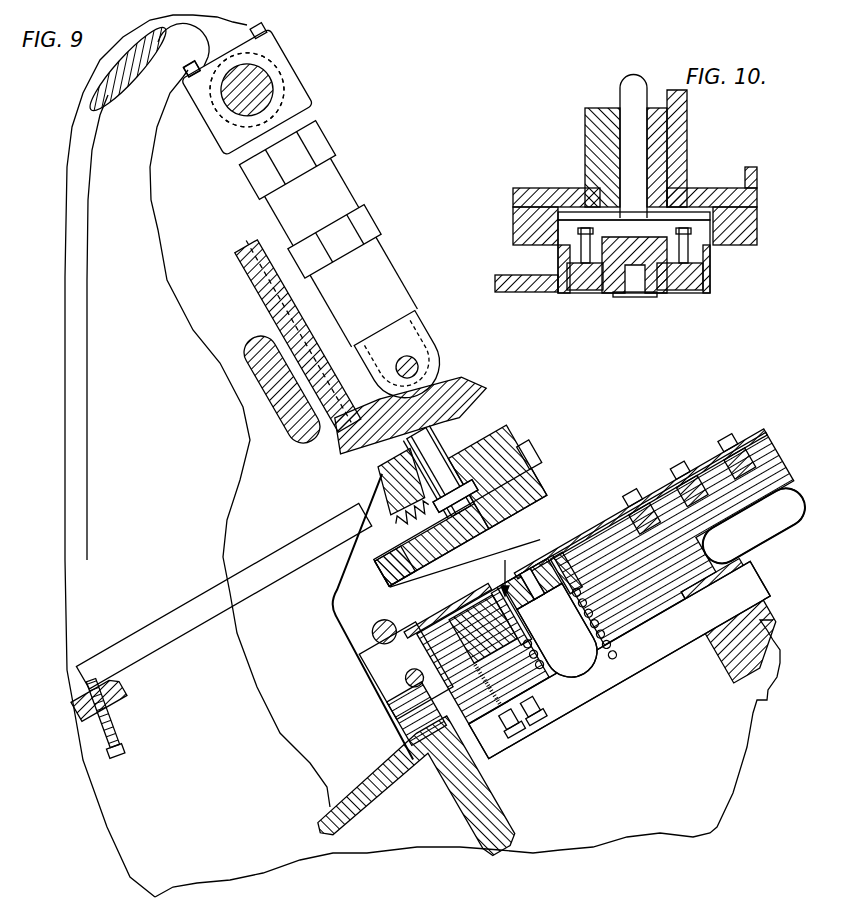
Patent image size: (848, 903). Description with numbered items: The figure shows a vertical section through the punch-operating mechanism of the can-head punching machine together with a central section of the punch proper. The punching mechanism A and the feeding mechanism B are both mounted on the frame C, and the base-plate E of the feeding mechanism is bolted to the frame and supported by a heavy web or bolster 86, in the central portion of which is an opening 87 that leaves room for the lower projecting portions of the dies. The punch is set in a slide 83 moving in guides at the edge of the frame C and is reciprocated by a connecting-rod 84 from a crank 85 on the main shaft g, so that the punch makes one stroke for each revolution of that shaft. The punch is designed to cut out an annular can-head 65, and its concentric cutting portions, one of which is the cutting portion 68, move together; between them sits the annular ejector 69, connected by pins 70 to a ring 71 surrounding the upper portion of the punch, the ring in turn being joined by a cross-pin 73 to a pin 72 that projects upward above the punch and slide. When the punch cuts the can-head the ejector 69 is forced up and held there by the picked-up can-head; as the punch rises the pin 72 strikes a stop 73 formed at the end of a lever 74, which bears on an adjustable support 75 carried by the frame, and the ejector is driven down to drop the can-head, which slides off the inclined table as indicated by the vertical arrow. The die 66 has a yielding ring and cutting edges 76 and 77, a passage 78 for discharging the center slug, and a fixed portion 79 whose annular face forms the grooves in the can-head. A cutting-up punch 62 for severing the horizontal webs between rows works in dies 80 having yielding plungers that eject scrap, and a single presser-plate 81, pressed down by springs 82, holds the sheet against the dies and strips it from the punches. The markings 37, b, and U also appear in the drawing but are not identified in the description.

In FIG. 9, the frame C is at (422, 456).
In FIG. 9, the crank 85 is at (283, 66).
In FIG. 9, the main shaft g is at (315, 98).
In FIG. 9, the connecting-rod 84 is at (410, 325).
In FIG. 9, the cross-pin 73 is at (467, 372).
In FIG. 10, the cross-pin 73 is at (610, 217).
In FIG. 9, the pin 72 is at (468, 430).
In FIG. 10, the pin 72 is at (635, 148).
In FIG. 9, the slide 83 is at (500, 430).
In FIG. 9, the punching mechanism A is at (449, 489).
In FIG. 9, the springs 82 is at (400, 568).
In FIG. 9, the cutting-up punch 62 is at (418, 592).
In FIG. 9, the plate 37 is at (405, 682).
In FIG. 9, the pin b is at (378, 624).
In FIG. 9, the feeding mechanism B is at (595, 599).
In FIG. 9, the die 66 is at (618, 500).
In FIG. 9, the bolts U is at (690, 500).
In FIG. 9, the base-plate E is at (754, 582).
In FIG. 9, the opening 87 is at (619, 659).
In FIG. 9, the passage 78 is at (562, 635).
In FIG. 9, the cutting edge 76 is at (500, 625).
In FIG. 9, the cutting edge 77 is at (528, 585).
In FIG. 9, the fixed portion 79 is at (548, 580).
In FIG. 9, the dies for cutting-up punches 80 is at (462, 622).
In FIG. 9, the presser-plate 81 is at (420, 612).
In FIG. 10, the presser-plate 81 is at (535, 290).
In FIG. 9, the bolster 86 is at (495, 786).
In FIG. 9, the lever 74 is at (266, 596).
In FIG. 9, the adjustable support 75 is at (122, 690).
In FIG. 10, the ring 71 is at (687, 207).
In FIG. 10, the cutting portion 68 is at (717, 281).
In FIG. 10, the annular ejector 69 is at (703, 273).
In FIG. 10, the pins 70 is at (573, 240).
In FIG. 10, the can-head 65 is at (583, 290).